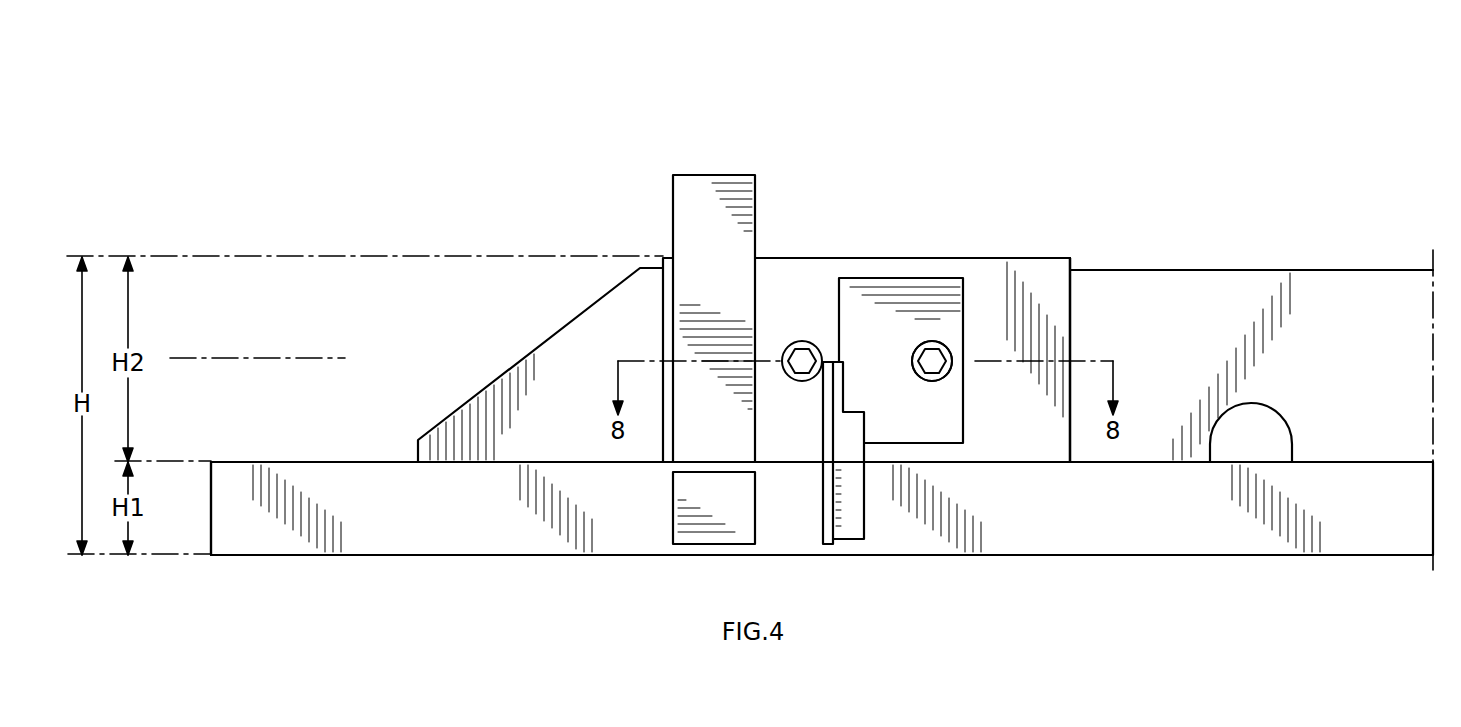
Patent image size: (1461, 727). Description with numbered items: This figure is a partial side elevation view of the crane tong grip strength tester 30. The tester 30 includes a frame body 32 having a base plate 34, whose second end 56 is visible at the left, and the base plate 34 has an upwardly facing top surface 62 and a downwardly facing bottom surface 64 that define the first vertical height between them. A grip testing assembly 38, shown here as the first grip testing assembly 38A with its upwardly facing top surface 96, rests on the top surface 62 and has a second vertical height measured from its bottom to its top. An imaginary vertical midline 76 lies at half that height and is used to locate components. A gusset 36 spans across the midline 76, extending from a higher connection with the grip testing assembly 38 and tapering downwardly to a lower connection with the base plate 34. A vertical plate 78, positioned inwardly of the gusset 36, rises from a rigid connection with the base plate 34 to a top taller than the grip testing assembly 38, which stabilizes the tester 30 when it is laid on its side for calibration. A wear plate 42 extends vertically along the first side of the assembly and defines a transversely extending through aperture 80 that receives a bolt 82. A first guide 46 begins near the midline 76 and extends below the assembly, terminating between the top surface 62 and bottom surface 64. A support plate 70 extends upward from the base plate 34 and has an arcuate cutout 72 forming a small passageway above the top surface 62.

The crane tong grip strength tester 30 is at (1156, 106).
The frame body 32 is at (465, 565).
The base plate 34 is at (390, 549).
The gusset plate 36 is at (585, 328).
The grip testing assembly 38 is at (979, 245).
The first grip testing assembly 38A is at (979, 245).
The wear plate 42 is at (892, 318).
The first guide 46 is at (858, 522).
The second end 56 is at (196, 517).
The upwardly facing top surface 62 is at (333, 461).
The downwardly facing bottom surface 64 is at (274, 556).
The support plate 70 is at (1361, 287).
The arcuate cutout 72 is at (1277, 416).
The imaginary vertical midline 76 is at (280, 358).
The vertical plate 78 is at (685, 213).
The through aperture 80 is at (933, 366).
The bolt 82 is at (797, 365).
The upwardly facing top surface 96 is at (1043, 257).